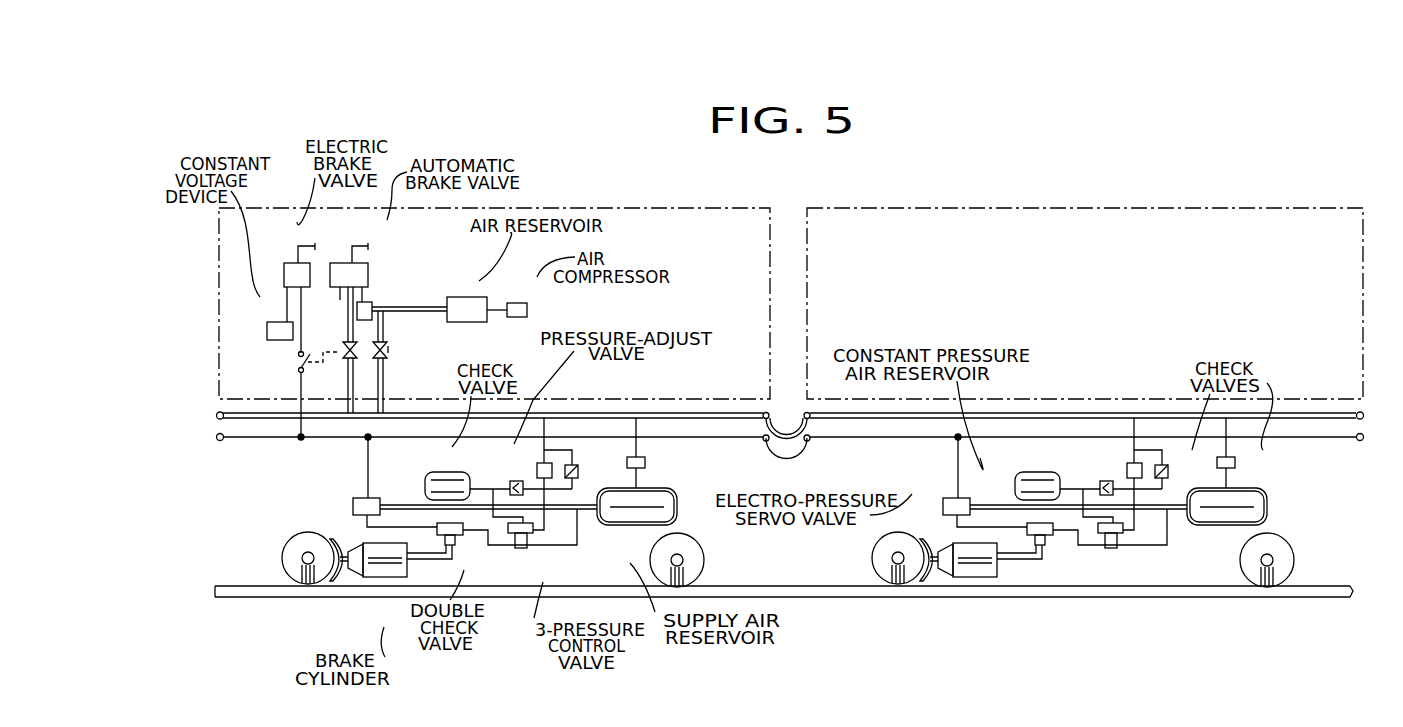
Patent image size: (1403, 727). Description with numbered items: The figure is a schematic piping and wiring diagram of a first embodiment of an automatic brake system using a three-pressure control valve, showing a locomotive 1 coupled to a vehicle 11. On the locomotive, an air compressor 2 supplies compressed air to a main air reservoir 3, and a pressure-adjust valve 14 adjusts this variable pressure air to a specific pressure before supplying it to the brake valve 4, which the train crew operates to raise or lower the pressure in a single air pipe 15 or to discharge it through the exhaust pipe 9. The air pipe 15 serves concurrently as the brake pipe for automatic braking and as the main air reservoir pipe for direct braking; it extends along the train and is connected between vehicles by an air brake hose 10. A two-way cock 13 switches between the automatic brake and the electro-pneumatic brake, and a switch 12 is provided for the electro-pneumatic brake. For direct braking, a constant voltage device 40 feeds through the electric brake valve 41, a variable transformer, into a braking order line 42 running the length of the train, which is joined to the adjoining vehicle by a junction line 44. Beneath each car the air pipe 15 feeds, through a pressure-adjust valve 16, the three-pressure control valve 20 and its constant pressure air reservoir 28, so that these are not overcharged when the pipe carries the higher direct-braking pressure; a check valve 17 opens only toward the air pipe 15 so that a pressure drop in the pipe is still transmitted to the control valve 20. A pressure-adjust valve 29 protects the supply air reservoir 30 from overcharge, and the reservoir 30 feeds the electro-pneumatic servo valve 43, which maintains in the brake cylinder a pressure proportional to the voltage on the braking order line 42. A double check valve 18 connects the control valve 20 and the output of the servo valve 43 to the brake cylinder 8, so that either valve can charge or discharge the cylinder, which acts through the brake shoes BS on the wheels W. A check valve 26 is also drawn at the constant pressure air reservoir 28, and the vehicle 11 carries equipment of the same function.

The locomotive 1 is at (628, 207).
The vehicle 11 is at (1040, 212).
The air compressor 2 is at (517, 303).
The main air reservoir 3 is at (478, 283).
The brake valve 4 is at (366, 263).
The electric brake valve 41 is at (285, 262).
The constant voltage device 40 is at (278, 322).
The exhaust pipe 9 is at (340, 295).
The pressure-adjust valve 14 is at (372, 306).
The switch 12 is at (298, 357).
The two-way cock 13 is at (390, 350).
The air pipe 15 is at (651, 412).
The braking order line 42 is at (283, 438).
The air brake hose 10 is at (789, 431).
The junction line 44 is at (786, 458).
The electro-pneumatic servo valve 43 is at (353, 504).
The constant pressure air reservoir 28 is at (433, 472).
The check valve 26 is at (510, 482).
The pressure-adjust valve 16 is at (537, 467).
The check valve 17 is at (578, 471).
The pressure-adjust valve 29 is at (645, 463).
The supply air reservoir 30 is at (612, 525).
The double check valve 18 is at (457, 545).
The three-pressure control valve 20 is at (522, 548).
The brake cylinder 8 is at (391, 578).
The wheels W is at (290, 552).
The brake shoes BS is at (348, 582).